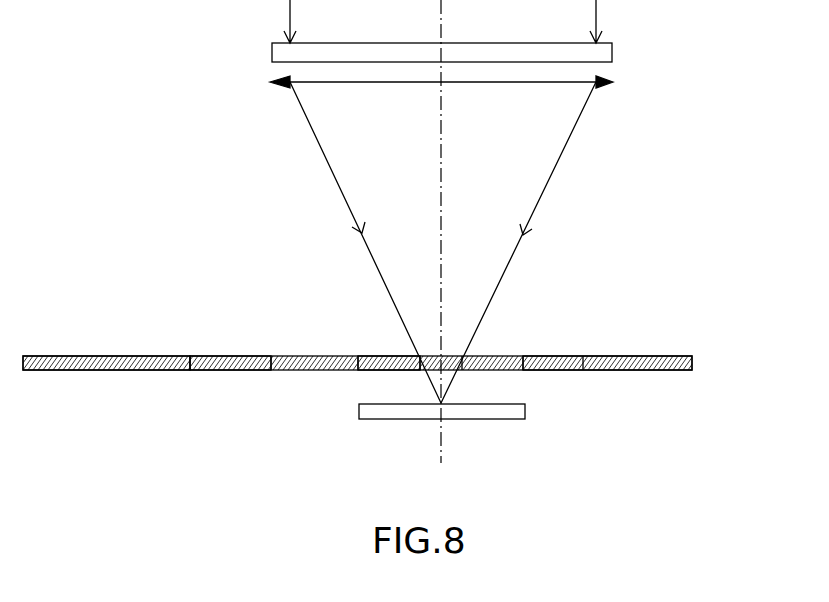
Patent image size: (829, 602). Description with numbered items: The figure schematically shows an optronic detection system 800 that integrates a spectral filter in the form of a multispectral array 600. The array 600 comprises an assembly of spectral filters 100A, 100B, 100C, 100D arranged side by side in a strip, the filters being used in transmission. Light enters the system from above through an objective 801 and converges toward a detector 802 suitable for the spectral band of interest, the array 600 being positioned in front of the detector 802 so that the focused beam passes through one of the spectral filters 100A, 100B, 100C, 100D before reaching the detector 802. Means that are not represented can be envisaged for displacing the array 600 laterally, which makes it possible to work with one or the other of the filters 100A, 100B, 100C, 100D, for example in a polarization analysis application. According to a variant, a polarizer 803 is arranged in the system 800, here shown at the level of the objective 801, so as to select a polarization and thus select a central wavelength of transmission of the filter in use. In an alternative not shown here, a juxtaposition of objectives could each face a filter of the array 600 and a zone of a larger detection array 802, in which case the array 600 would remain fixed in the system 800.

The optronic detection system 800 is at (648, 191).
The objective 801 is at (573, 81).
The detector 802 is at (487, 417).
The polarizer 803 is at (278, 53).
The multispectral array 600 is at (673, 338).
The spectral filter 100A is at (125, 356).
The spectral filter 100B is at (271, 356).
The spectral filter 100C is at (386, 356).
The spectral filter 100D is at (583, 356).